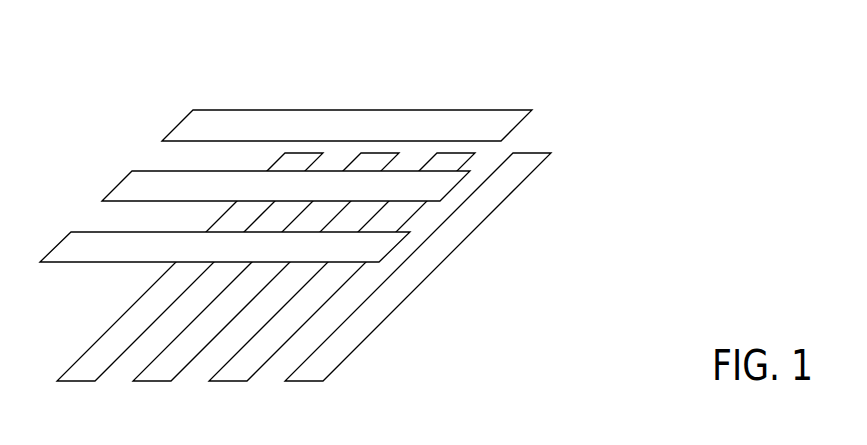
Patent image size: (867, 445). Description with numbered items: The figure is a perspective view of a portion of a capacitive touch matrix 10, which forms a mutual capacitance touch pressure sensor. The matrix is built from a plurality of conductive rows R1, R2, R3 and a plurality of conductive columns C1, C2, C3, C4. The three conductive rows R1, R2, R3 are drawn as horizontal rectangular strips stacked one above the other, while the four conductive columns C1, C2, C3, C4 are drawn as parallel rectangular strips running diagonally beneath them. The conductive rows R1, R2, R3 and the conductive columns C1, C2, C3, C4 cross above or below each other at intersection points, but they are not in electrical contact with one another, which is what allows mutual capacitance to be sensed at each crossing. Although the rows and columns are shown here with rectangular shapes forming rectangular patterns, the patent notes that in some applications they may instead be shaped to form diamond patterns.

The capacitive touch matrix 10 is at (336, 62).
The conductive row R1 is at (328, 125).
The conductive row R2 is at (271, 185).
The conductive row R3 is at (213, 247).
The conductive column C1 is at (190, 285).
The conductive column C2 is at (266, 285).
The conductive column C3 is at (342, 285).
The conductive column C4 is at (418, 285).